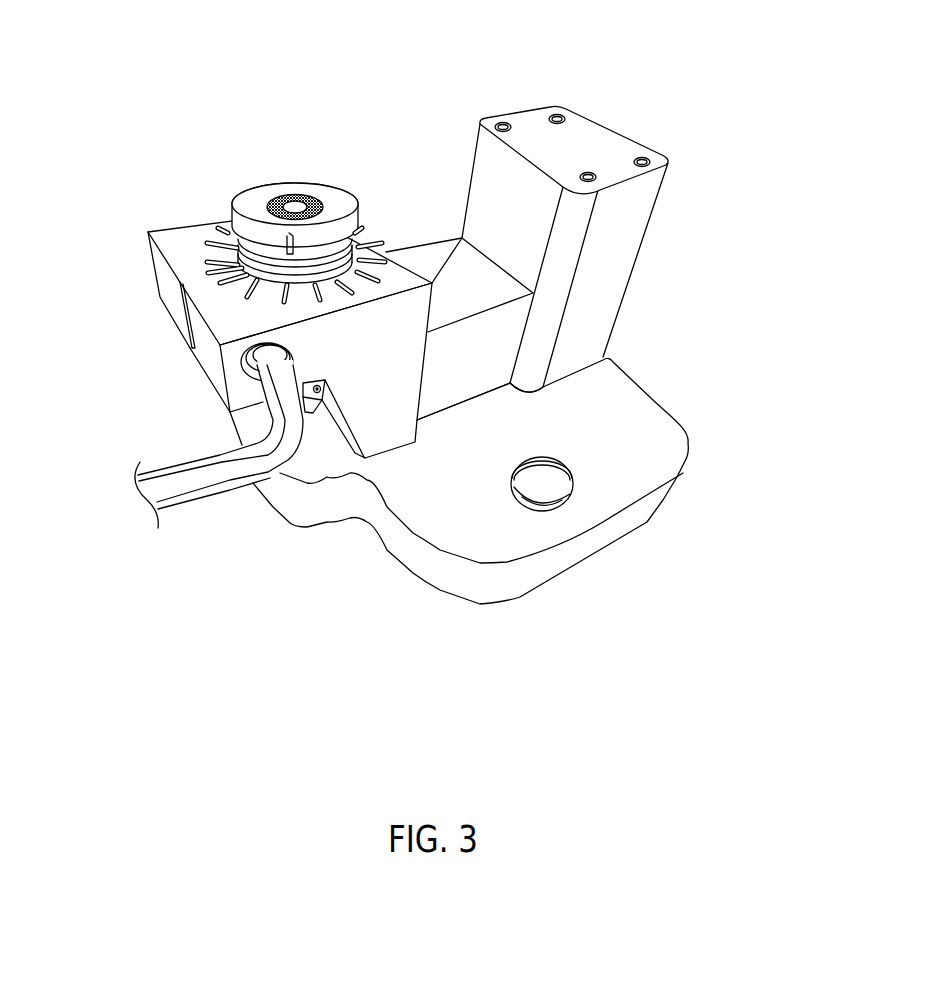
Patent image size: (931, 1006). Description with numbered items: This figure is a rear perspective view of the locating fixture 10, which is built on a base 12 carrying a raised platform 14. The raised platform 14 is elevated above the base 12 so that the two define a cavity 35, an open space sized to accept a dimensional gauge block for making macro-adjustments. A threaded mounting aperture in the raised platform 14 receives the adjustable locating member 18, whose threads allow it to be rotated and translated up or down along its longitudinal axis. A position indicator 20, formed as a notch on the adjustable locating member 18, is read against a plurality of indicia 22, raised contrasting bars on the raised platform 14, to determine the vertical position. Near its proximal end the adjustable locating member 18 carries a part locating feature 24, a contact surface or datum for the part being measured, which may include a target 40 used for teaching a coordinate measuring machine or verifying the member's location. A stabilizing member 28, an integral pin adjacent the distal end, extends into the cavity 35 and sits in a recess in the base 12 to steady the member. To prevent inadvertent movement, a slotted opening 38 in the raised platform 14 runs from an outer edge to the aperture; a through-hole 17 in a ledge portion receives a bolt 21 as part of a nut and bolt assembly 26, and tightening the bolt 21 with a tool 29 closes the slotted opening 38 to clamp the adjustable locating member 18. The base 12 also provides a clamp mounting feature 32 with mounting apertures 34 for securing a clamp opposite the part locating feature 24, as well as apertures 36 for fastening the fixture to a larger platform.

The locating fixture 10 is at (714, 68).
The base 12 is at (660, 459).
The raised platform 14 is at (200, 297).
The through-hole 17 is at (307, 343).
The adjustable locating member 18 is at (219, 229).
The position indicator 20 is at (256, 198).
The bolt 21 is at (243, 366).
The indicia 22 is at (229, 303).
The part locating feature 24 is at (334, 203).
The nut and bolt assembly 26 is at (308, 357).
The stabilizing member 28 is at (313, 405).
The tool 29 is at (195, 483).
The clamp mounting feature 32 is at (582, 140).
The mounting apertures 34 is at (667, 168).
The cavity 35 is at (311, 453).
The apertures 36 is at (554, 495).
The slotted opening 38 is at (173, 277).
The target 40 is at (292, 205).